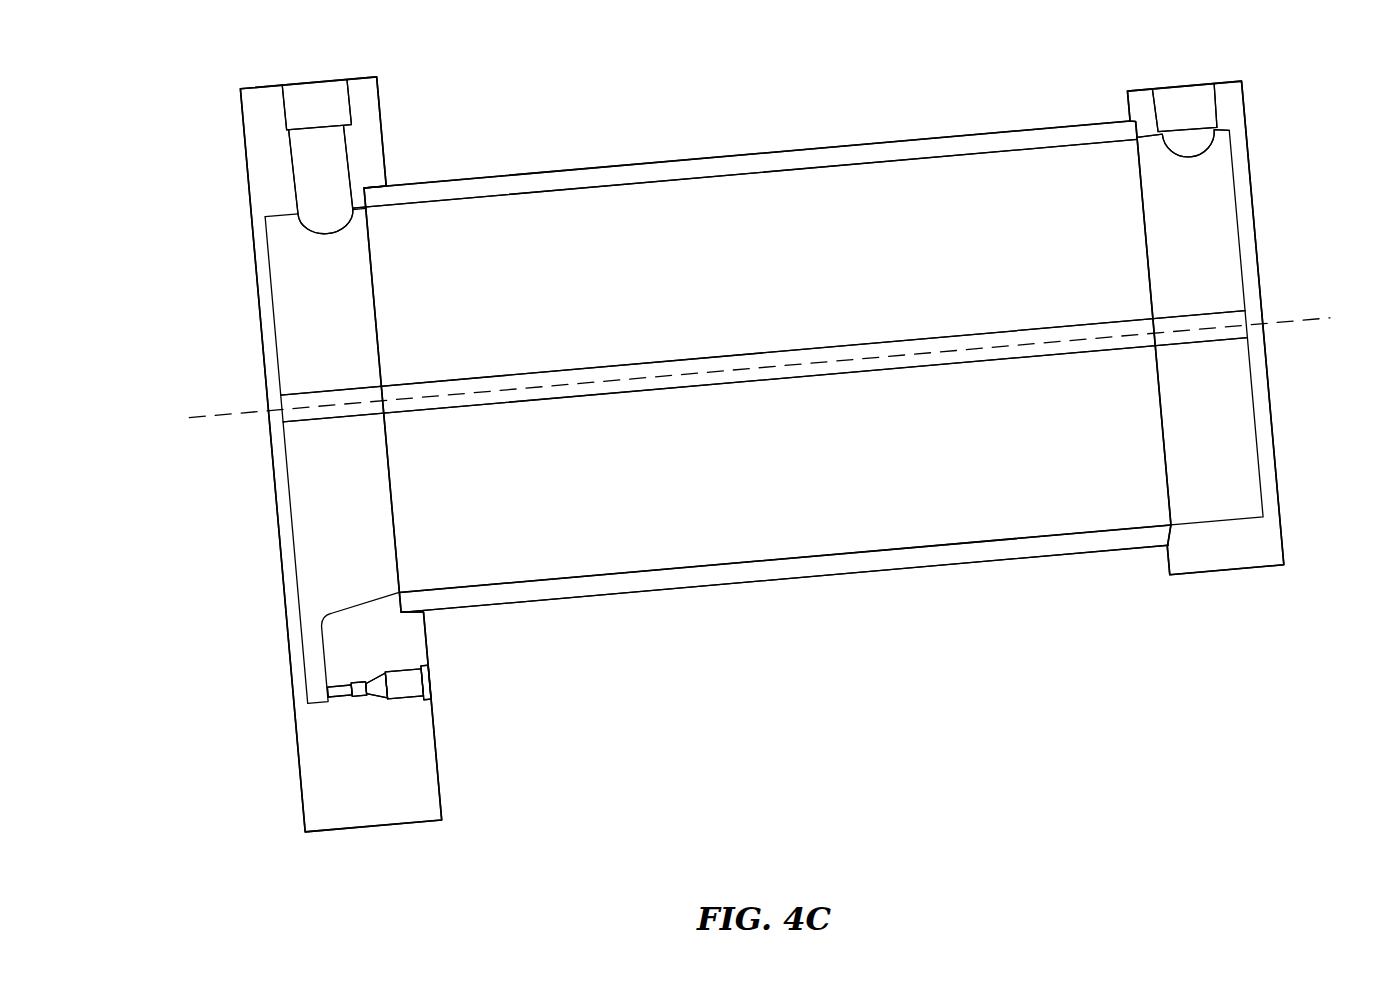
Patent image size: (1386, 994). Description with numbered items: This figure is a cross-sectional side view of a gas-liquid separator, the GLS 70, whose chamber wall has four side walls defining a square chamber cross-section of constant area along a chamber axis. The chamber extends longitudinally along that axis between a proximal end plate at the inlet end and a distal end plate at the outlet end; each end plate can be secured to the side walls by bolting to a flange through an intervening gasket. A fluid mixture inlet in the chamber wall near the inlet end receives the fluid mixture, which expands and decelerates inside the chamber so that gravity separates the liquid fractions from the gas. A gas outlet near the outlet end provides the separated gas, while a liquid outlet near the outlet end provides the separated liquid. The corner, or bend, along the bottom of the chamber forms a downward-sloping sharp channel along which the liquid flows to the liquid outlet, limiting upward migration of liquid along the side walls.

The GLS 70 is at (667, 129).